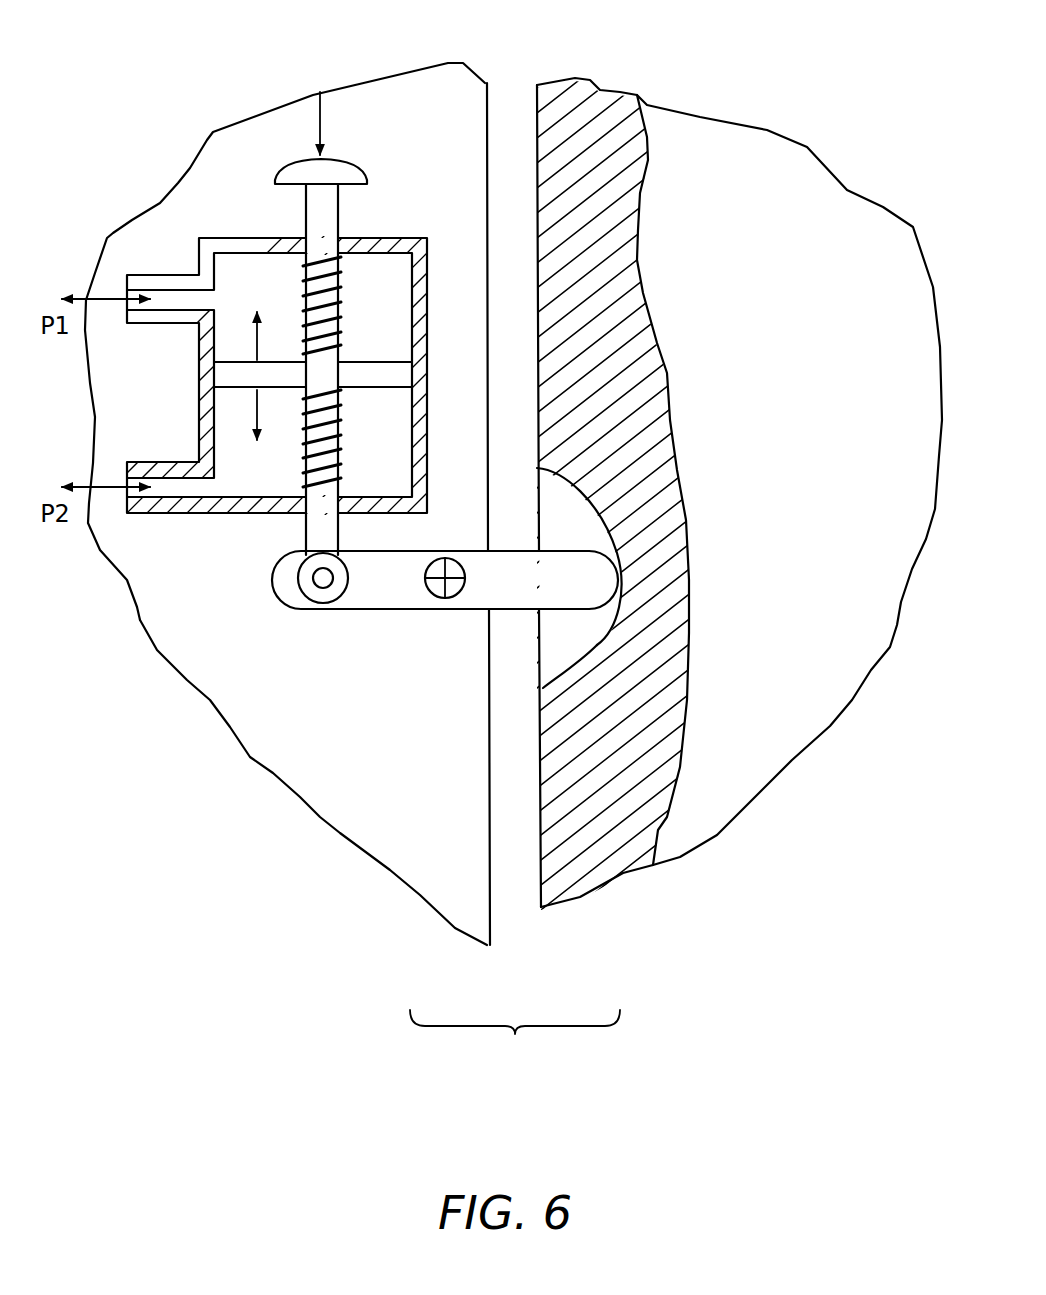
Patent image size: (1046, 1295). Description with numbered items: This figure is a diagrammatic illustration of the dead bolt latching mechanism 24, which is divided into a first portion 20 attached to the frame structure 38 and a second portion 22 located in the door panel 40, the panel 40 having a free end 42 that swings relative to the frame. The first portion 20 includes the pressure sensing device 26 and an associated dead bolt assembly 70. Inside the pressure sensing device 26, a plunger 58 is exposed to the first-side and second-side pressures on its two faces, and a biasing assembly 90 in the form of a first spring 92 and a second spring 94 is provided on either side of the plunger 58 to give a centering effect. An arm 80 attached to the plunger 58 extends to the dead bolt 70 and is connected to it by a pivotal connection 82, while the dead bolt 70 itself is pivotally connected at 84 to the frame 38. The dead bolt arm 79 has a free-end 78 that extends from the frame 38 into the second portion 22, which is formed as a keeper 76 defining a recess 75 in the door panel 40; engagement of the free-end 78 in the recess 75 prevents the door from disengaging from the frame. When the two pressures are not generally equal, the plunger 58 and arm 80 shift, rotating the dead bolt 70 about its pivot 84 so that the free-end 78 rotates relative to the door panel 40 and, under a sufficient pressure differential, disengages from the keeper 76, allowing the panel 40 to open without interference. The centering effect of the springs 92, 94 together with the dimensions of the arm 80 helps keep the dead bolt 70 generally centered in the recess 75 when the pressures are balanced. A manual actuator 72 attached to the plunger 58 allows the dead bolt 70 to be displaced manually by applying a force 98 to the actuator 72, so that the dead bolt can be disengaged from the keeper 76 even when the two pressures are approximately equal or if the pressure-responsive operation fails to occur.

The first portion 20 is at (150, 620).
The second portion 22 is at (650, 650).
The latching mechanism 24 is at (515, 1041).
The pressure sensing device 26 is at (440, 245).
The frame structure 38 is at (251, 755).
The panel 40 is at (860, 595).
The free end 42 is at (542, 866).
The plunger 58 is at (373, 380).
The dead bolt assembly 70 is at (376, 613).
The actuator 72 is at (293, 161).
The recess 75 is at (600, 636).
The keeper 76 is at (580, 657).
The free-end 78 is at (585, 578).
The dead bolt arm 79 is at (485, 615).
The arm 80 is at (320, 533).
The pivotal connection 82 is at (340, 613).
The pivotal connection 84 is at (442, 605).
The biasing assembly 90 is at (362, 325).
The first spring 92 is at (340, 281).
The second spring 94 is at (340, 437).
The force 98 is at (322, 110).